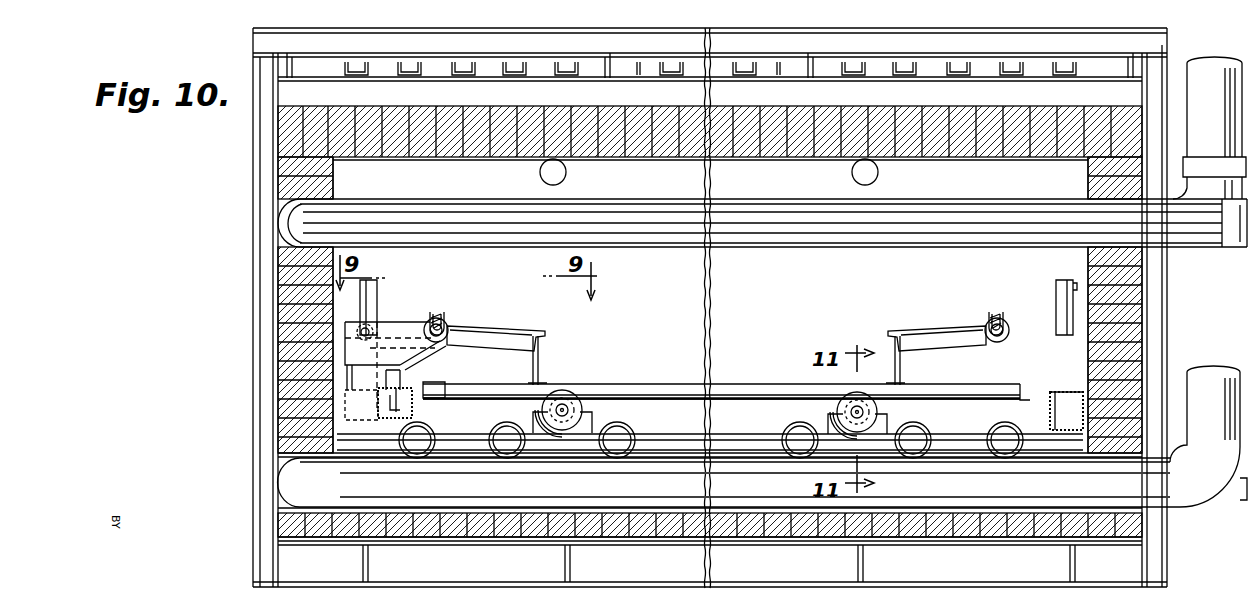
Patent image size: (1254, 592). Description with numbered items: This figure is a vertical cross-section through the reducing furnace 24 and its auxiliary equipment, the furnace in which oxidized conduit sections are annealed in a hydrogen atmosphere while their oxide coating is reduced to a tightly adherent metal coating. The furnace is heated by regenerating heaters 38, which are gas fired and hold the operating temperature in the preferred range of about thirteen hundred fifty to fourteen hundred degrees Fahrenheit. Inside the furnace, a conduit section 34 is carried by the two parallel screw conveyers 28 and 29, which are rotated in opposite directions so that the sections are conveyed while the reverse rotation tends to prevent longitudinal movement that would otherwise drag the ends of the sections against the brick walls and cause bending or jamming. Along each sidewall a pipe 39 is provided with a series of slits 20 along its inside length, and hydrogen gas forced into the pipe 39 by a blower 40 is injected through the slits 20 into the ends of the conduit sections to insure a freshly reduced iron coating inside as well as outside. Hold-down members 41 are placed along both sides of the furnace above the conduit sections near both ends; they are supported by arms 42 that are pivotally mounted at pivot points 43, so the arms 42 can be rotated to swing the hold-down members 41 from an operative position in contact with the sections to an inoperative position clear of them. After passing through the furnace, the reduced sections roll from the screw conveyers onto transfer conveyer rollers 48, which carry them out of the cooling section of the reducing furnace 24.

The slits 20 is at (412, 388).
The reducing furnace 24 is at (268, 351).
The screw conveyer 28 is at (848, 400).
The screw conveyer 29 is at (576, 398).
The conduit section 34 is at (648, 387).
The regenerating heaters 38 is at (950, 203).
The pipe 39 is at (412, 410).
The blower 40 is at (374, 298).
The hold-down members 41 is at (543, 363).
The arms 42 is at (486, 350).
The pivot points 43 is at (436, 322).
The transfer conveyer rollers 48 is at (627, 434).